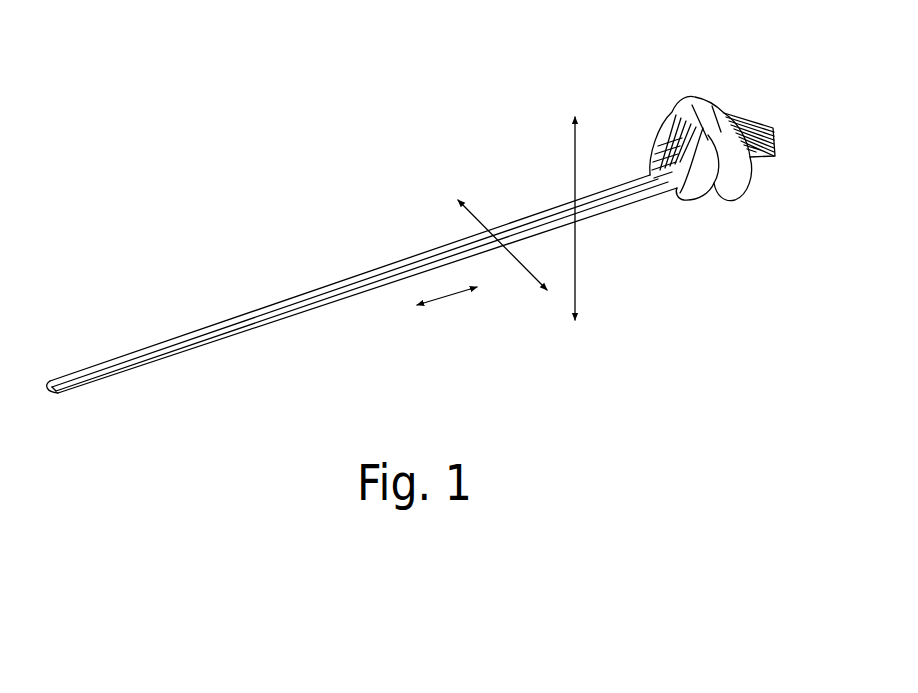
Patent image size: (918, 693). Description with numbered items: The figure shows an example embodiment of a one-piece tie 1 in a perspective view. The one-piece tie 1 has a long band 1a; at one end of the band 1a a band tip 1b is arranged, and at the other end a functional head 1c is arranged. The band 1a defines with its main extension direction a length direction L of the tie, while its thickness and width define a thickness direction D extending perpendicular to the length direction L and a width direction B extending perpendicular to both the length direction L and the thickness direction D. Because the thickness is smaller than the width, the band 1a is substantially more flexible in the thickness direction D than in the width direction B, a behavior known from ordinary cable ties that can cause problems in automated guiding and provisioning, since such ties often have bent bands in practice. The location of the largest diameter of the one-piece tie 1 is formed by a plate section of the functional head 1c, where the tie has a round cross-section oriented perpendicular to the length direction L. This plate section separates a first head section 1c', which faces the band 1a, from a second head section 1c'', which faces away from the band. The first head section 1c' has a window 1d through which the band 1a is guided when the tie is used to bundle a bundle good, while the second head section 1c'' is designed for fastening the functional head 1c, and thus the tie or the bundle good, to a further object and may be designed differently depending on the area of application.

The one-piece tie 1 is at (335, 272).
The band 1a is at (244, 311).
The band tip 1b is at (48, 386).
The functional head 1c is at (702, 138).
The first head section 1c' is at (635, 129).
The second head section 1c'' is at (770, 93).
The window 1d is at (672, 117).
The width direction B is at (487, 220).
The thickness direction D is at (583, 270).
The length direction L is at (450, 318).